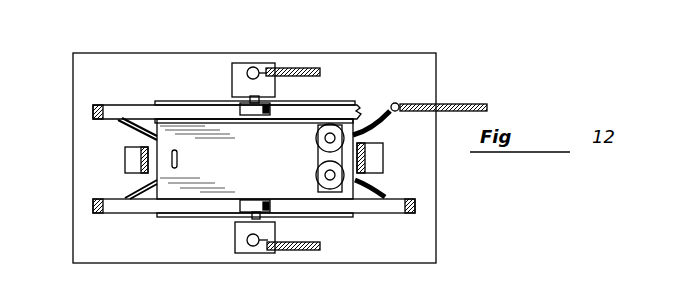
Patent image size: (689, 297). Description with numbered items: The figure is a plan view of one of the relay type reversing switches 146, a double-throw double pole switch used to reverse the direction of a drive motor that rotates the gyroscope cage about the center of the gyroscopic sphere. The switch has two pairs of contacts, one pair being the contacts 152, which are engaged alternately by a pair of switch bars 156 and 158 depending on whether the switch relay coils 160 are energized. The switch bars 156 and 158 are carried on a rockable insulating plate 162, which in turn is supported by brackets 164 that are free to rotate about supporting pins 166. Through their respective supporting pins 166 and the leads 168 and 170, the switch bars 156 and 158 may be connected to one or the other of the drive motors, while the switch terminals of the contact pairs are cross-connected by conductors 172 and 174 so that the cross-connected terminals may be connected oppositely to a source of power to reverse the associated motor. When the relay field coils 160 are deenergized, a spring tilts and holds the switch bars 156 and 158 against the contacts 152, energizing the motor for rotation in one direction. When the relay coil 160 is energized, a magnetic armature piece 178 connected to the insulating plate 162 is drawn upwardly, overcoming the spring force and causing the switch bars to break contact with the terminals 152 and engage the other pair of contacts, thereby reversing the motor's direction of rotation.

The relay type reversing switch 146 is at (417, 53).
The contacts 152 is at (402, 97).
The switch bar 156 is at (93, 110).
The switch bar 158 is at (93, 207).
The switch relay coil 160 is at (318, 145).
The rockable insulating plate 162 is at (227, 169).
The bracket 164 is at (267, 108).
The supporting pin 166 is at (250, 100).
The lead 168 is at (300, 63).
The lead 170 is at (303, 252).
The conductor 172 is at (375, 132).
The conductor 174 is at (384, 184).
The magnetic armature piece 178 is at (318, 174).